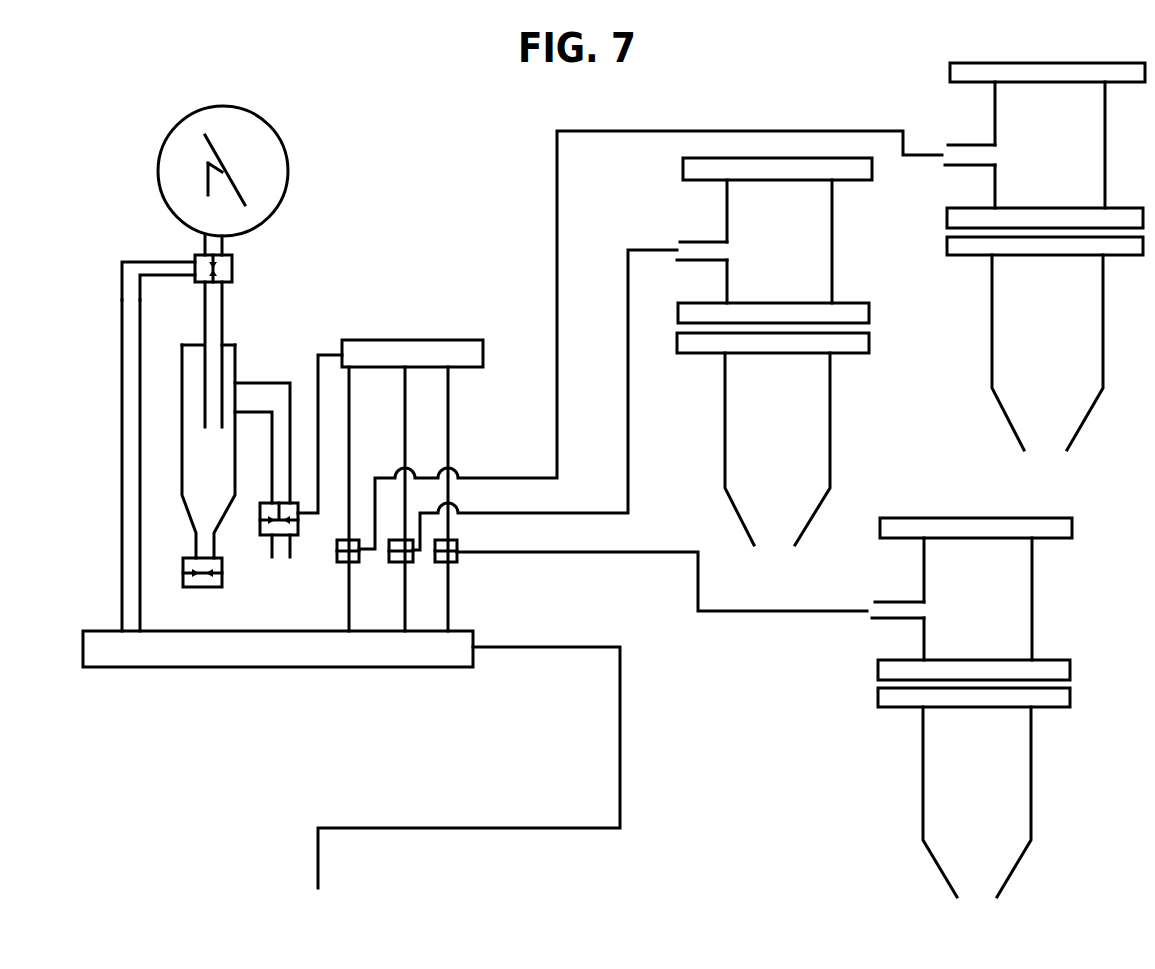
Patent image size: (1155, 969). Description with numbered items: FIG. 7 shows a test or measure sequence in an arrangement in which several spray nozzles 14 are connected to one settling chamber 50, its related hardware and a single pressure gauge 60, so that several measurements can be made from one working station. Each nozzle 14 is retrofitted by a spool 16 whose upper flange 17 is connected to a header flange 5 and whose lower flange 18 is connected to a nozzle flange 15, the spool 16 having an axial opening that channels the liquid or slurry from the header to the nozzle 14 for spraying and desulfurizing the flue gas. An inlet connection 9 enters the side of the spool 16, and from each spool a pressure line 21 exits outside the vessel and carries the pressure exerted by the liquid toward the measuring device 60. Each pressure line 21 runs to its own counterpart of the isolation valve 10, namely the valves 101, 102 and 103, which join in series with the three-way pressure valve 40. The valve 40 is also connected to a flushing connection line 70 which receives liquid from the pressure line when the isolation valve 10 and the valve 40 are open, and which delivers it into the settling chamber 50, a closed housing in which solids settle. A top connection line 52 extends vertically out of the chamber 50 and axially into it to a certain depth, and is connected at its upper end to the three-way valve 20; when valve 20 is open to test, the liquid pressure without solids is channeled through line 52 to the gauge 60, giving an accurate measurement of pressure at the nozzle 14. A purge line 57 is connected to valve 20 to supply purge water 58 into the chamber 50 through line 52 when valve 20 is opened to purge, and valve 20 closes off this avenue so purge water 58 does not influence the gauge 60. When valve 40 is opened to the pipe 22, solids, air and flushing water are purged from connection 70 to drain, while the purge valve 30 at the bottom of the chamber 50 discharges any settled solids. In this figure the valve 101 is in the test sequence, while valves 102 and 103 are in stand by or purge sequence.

The header flange 5 is at (780, 351).
The inlet pipe 9 is at (683, 242).
The isolation valve 10 is at (352, 563).
The spray nozzle 14 is at (757, 432).
The nozzle flange 15 is at (855, 345).
The spool 16 is at (753, 238).
The upper flange 17 is at (857, 182).
The lower flange 18 is at (850, 318).
The three-way valve 20 is at (234, 266).
The pressure line 21 is at (646, 371).
The drain pipe 22 is at (290, 558).
The purge valve 30 is at (200, 588).
The three-way pressure valve 40 is at (260, 535).
The settling chamber 50 is at (183, 503).
The top connection line 52 is at (228, 312).
The purge line 57 is at (153, 263).
The purge water 58 is at (128, 529).
The pressure gauge 60 is at (270, 126).
The flushing connection line 70 is at (265, 381).
The isolation valve 101 is at (353, 540).
The isolation valve 102 is at (405, 540).
The isolation valve 103 is at (457, 541).